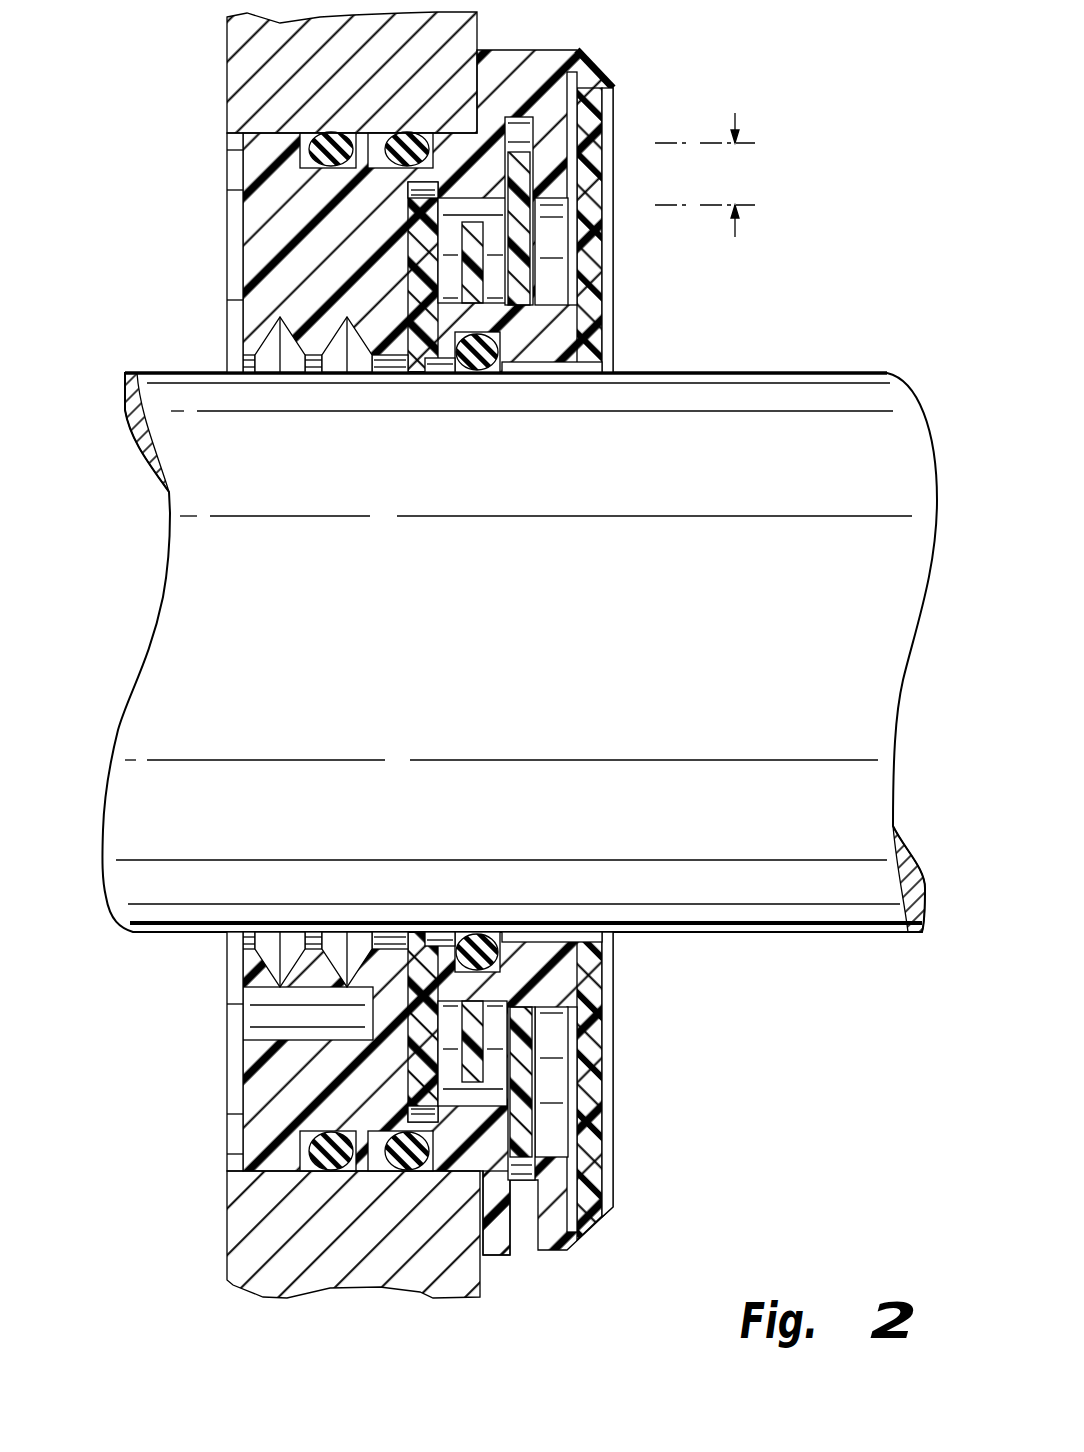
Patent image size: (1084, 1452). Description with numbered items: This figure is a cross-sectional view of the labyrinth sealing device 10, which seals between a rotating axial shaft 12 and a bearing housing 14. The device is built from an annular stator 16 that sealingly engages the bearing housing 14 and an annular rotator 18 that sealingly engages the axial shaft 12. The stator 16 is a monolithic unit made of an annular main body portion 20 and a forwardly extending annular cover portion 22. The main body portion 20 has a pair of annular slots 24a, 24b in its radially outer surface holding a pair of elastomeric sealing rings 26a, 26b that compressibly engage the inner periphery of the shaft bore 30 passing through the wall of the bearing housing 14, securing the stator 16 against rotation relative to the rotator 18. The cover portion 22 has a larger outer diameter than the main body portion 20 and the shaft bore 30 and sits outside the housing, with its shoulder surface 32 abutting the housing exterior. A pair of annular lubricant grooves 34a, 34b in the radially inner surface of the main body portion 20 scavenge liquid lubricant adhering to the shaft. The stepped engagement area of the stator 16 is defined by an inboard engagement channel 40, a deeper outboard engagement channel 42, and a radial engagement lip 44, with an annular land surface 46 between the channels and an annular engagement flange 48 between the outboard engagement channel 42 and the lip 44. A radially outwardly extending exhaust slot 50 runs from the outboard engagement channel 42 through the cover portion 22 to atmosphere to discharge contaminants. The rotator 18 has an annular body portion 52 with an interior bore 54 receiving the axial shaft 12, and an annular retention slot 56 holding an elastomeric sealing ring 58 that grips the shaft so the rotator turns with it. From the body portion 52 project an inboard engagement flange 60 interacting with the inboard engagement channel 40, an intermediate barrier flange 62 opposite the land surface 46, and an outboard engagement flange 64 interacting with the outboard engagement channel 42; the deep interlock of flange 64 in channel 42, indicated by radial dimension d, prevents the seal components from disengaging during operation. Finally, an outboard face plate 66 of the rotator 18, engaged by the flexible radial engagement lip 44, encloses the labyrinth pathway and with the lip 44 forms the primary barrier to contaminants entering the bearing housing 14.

The sealing device 10 is at (742, 283).
The axial shaft 12 is at (808, 430).
The bearing housing 14 is at (247, 43).
The annular stator 16 is at (426, 245).
The annular rotator 18 is at (622, 322).
The annular main body portion 20 is at (327, 240).
The annular cover portion 22 is at (590, 120).
The annular slot 24a is at (302, 148).
The annular slot 24b is at (327, 185).
The elastomeric sealing ring 26a is at (330, 133).
The elastomeric sealing ring 26b is at (400, 130).
The shaft bore 30 is at (285, 1136).
The shoulder surface 32 is at (603, 70).
The annular lubricant groove 34a is at (268, 945).
The annular lubricant groove 34b is at (337, 945).
The inboard engagement channel 40 is at (400, 1097).
The outboard engagement channel 42 is at (527, 133).
The radial engagement lip 44 is at (608, 95).
The annular land surface 46 is at (480, 1103).
The annular engagement flange 48 is at (556, 1120).
The exhaust slot 50 is at (513, 1210).
The annular body portion 52 is at (430, 1053).
The interior bore 54 is at (570, 943).
The annular retention slot 56 is at (432, 365).
The elastomeric sealing ring 58 is at (487, 370).
The inboard engagement flange 60 is at (410, 262).
The intermediate barrier flange 62 is at (467, 273).
The outboard engagement flange 64 is at (517, 223).
The outboard face plate 66 is at (600, 1117).